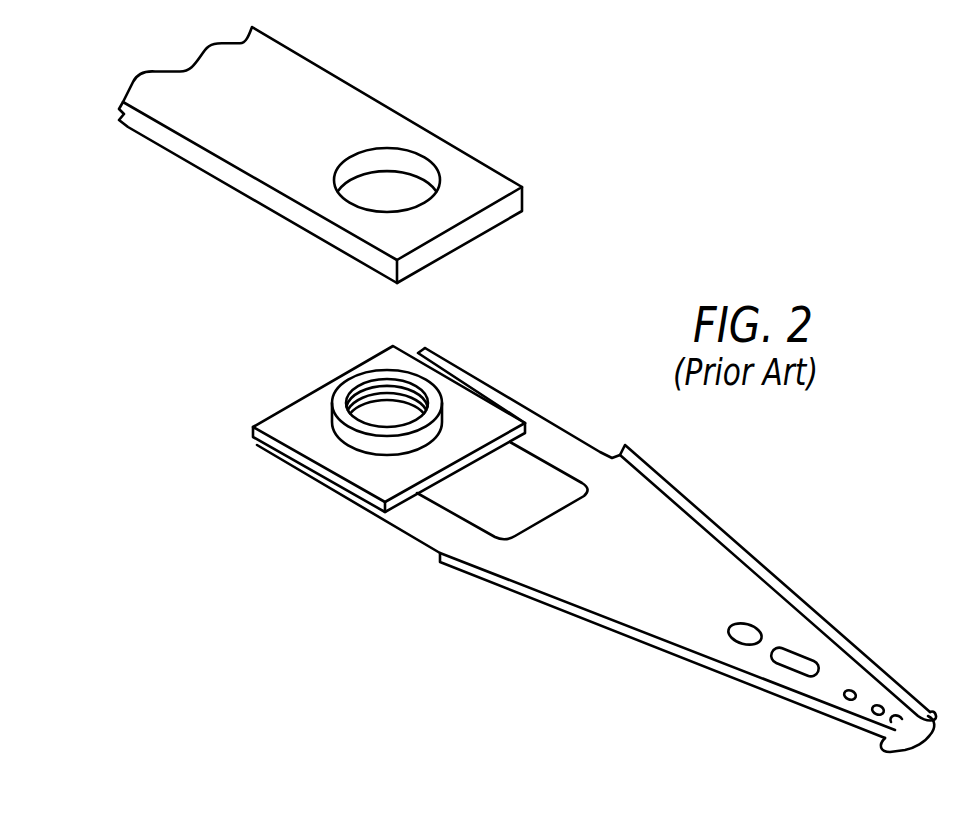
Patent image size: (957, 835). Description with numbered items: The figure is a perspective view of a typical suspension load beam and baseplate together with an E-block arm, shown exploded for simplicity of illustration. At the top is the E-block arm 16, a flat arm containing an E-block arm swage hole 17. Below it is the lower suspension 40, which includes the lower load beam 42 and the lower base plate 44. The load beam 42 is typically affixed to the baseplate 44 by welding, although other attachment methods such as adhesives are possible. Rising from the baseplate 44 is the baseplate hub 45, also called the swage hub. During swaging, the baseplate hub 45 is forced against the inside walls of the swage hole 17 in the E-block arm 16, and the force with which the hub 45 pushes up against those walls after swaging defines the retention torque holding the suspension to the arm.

The E-block arm 16 is at (317, 87).
The E-block arm swage hole 17 is at (395, 185).
The lower suspension 40 is at (640, 652).
The lower load beam 42 is at (450, 537).
The lower base plate 44 is at (333, 457).
The baseplate hub 45 is at (345, 393).